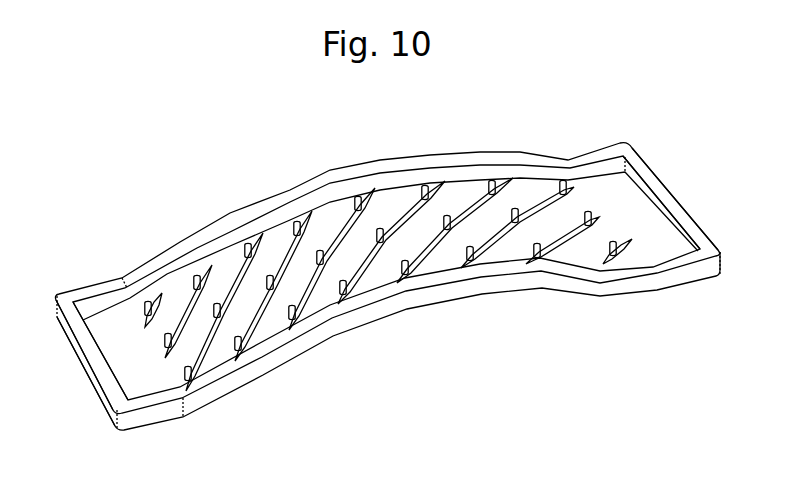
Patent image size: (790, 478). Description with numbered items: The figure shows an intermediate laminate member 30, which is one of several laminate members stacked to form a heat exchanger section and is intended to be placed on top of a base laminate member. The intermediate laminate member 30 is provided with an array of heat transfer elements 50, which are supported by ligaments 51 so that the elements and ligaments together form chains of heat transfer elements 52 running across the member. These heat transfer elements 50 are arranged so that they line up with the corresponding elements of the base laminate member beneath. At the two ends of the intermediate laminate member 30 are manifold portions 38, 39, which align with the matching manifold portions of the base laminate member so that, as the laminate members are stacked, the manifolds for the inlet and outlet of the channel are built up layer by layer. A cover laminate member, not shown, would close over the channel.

The intermediate laminate member 30 is at (512, 274).
The manifold portion 38 is at (670, 202).
The manifold portion 39 is at (102, 363).
The heat transfer elements 50 is at (423, 190).
The ligaments 51 is at (253, 242).
The chains of heat transfer elements 52 is at (337, 226).